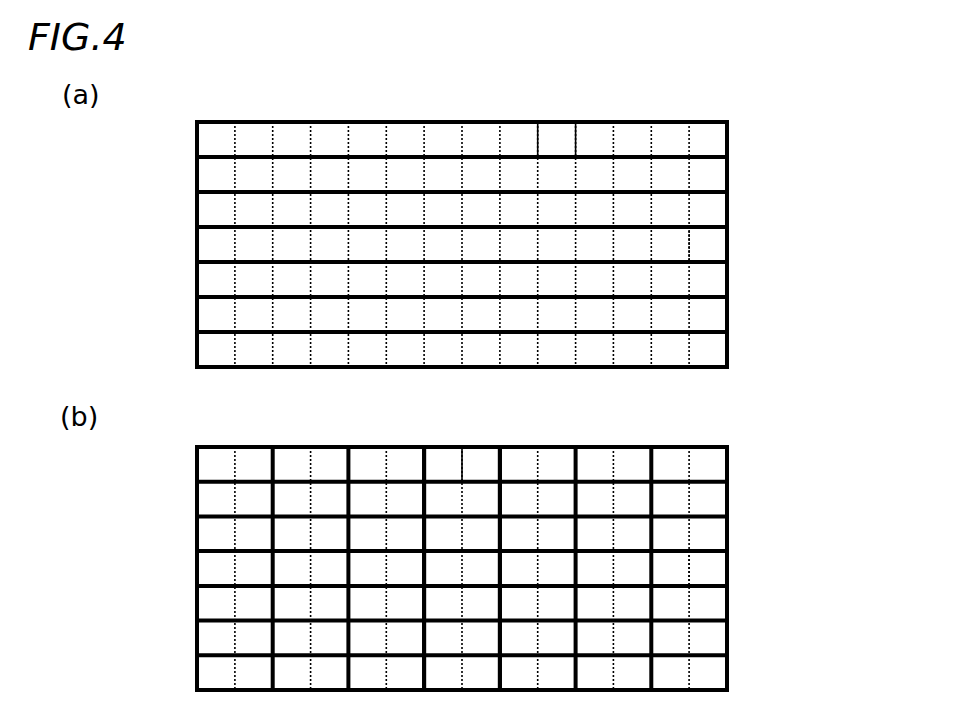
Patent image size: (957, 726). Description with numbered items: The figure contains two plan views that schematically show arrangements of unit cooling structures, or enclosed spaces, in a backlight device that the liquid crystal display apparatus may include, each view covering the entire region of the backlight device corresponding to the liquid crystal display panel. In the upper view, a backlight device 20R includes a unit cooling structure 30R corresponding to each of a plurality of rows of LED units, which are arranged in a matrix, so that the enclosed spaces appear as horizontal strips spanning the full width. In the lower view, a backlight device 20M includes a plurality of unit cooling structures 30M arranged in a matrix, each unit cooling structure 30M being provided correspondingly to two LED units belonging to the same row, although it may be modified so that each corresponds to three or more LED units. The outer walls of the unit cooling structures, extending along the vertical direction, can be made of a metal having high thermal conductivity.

The backlight device 20R is at (753, 104).
The backlight device 20M is at (748, 428).
The unit cooling structure 30R is at (729, 143).
The unit cooling structure 30M is at (452, 447).